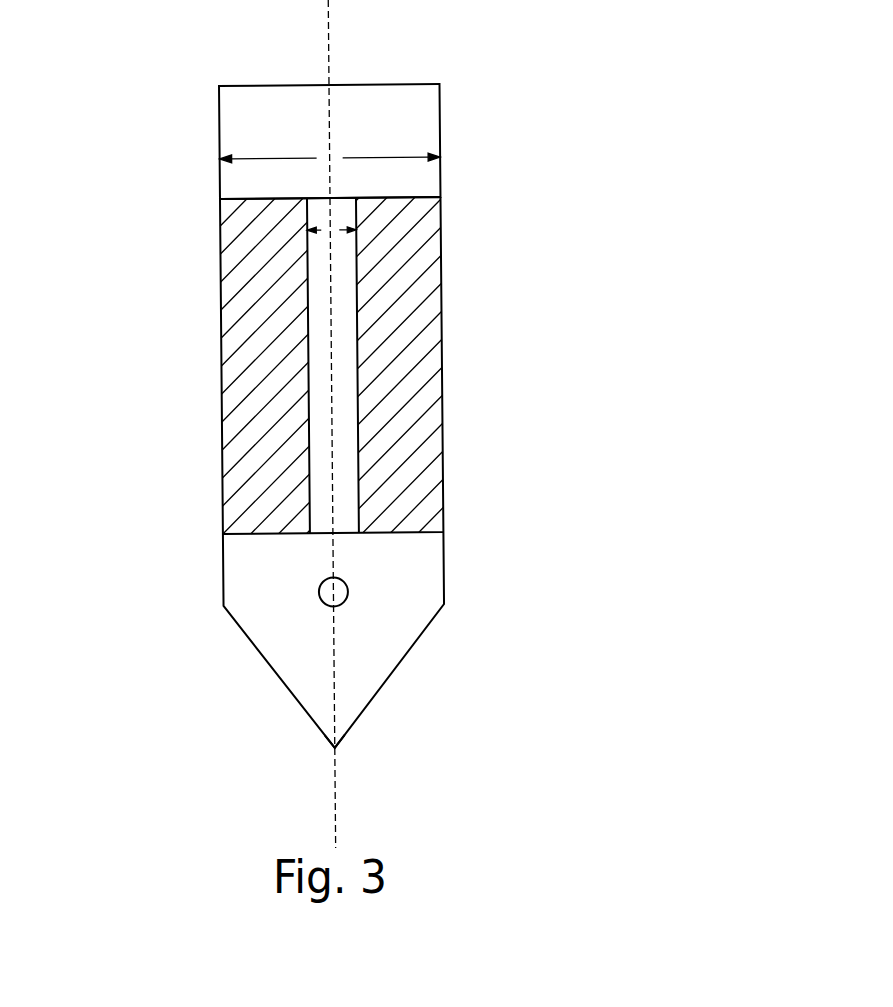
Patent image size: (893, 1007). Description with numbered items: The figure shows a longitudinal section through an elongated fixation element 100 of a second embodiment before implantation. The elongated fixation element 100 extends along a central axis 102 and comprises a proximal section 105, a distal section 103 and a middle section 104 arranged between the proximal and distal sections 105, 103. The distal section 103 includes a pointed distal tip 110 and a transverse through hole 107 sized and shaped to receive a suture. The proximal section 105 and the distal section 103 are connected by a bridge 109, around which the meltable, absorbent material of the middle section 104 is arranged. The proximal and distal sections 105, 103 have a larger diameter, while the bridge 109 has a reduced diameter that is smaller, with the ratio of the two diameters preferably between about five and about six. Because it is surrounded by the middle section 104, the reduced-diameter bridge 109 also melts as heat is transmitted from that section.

The elongated fixation element 100 is at (381, 416).
The central axis 102 is at (328, 15).
The distal section 103 is at (378, 641).
The middle section 104 is at (413, 363).
The proximal section 105 is at (415, 123).
The transverse through hole 107 is at (325, 595).
The bridge 109 is at (330, 367).
The pointed distal tip 110 is at (335, 750).